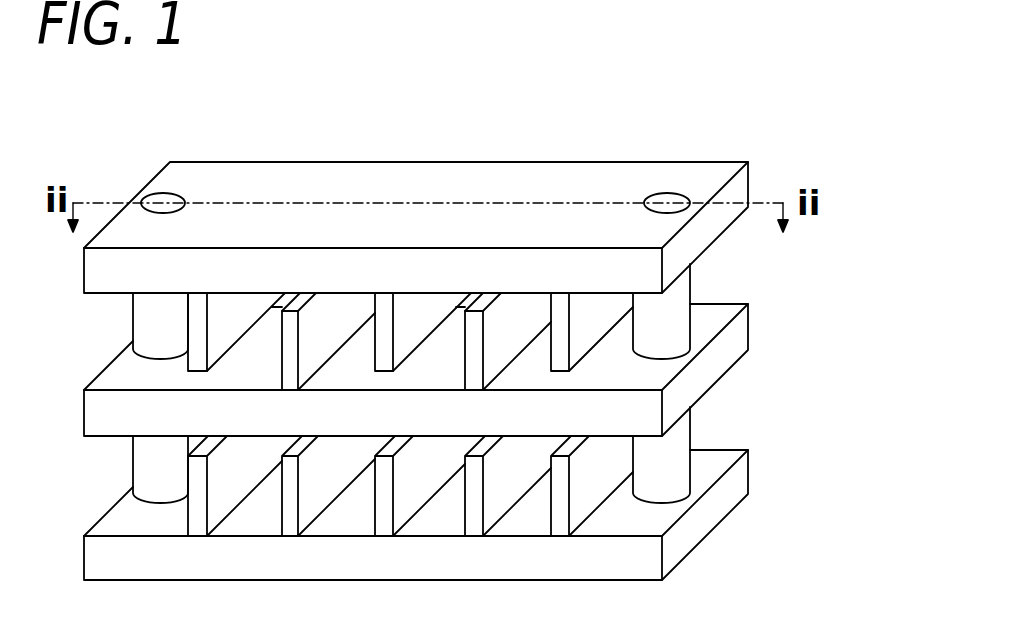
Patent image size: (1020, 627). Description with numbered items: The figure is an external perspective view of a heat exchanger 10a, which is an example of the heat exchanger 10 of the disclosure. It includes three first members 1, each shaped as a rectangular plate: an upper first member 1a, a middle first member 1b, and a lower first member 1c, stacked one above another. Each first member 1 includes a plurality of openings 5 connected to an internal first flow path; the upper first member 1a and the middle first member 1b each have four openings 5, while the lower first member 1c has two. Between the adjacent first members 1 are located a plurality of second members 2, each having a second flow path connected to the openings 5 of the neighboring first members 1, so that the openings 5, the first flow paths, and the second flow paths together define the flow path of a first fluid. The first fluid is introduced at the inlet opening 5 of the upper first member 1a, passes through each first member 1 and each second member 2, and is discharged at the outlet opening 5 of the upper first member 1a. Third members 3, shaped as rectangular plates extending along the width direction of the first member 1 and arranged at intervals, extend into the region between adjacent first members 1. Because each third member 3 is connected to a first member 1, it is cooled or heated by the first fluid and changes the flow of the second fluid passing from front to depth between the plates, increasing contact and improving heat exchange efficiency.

The heat exchanger 10a is at (186, 138).
The heat exchanger 10 is at (462, 338).
The first member 1 is at (486, 327).
The upper first member 1a is at (410, 177).
The middle first member 1b is at (703, 375).
The lower first member 1c is at (707, 508).
The second member 2 is at (148, 315).
The third member 3 is at (288, 497).
The opening 5 is at (165, 206).